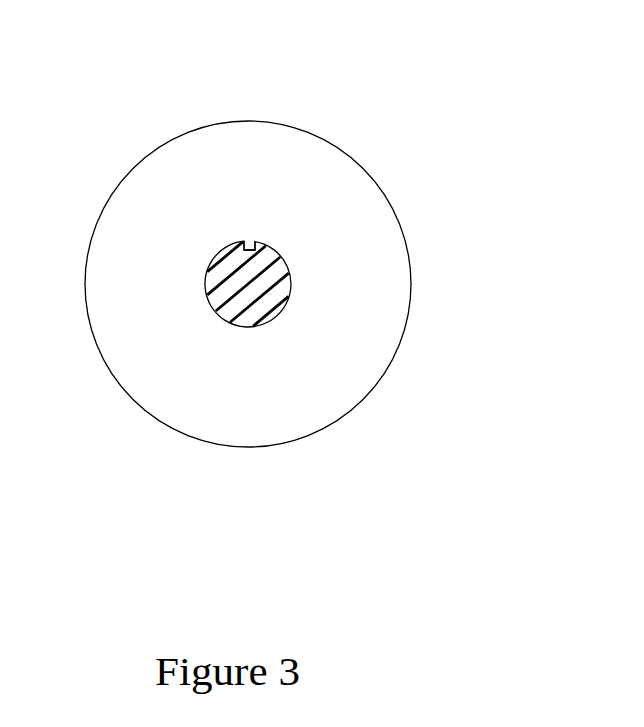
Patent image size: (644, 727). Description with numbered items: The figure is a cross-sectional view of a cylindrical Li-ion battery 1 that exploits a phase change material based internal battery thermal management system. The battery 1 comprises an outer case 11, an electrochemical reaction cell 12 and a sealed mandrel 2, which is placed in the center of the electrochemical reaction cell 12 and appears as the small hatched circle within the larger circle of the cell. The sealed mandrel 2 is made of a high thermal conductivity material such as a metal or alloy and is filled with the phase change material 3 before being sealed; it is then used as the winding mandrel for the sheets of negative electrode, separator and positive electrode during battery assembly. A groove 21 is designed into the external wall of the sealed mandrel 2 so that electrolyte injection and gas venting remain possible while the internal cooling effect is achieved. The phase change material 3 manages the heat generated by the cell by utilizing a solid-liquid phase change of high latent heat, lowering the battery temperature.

The Li-ion battery 1 is at (343, 251).
The Li-ion battery case 11 is at (328, 284).
The Li-ion electrochemical reaction cell 12 is at (462, 302).
The sealed mandrel 2 is at (333, 191).
The groove 21 is at (327, 152).
The phase change material (PCM) 3 is at (334, 242).